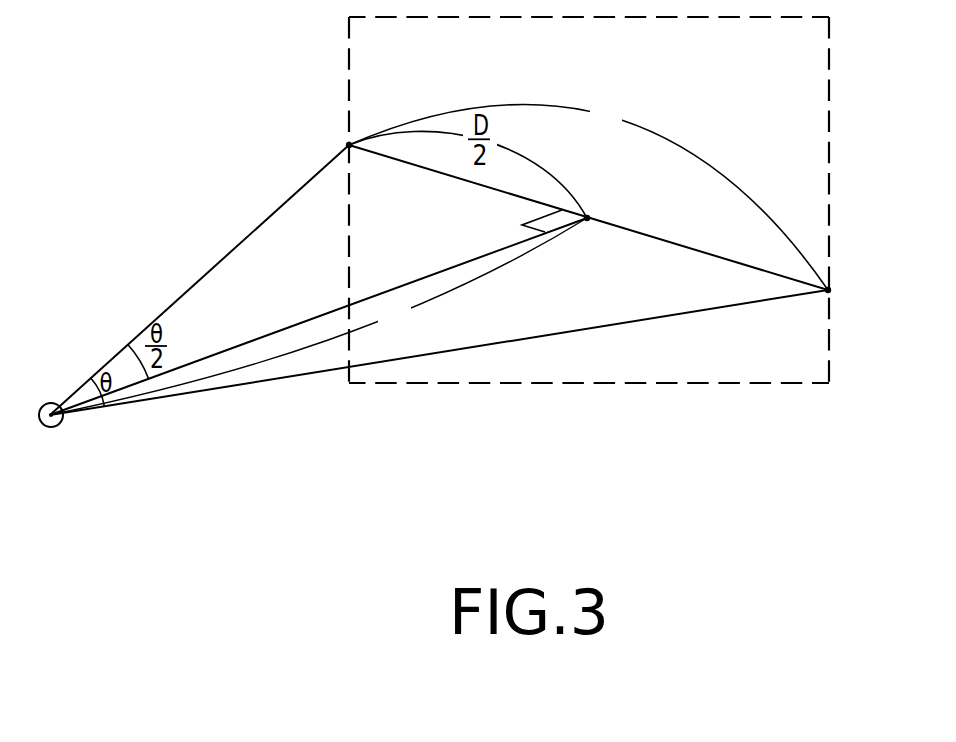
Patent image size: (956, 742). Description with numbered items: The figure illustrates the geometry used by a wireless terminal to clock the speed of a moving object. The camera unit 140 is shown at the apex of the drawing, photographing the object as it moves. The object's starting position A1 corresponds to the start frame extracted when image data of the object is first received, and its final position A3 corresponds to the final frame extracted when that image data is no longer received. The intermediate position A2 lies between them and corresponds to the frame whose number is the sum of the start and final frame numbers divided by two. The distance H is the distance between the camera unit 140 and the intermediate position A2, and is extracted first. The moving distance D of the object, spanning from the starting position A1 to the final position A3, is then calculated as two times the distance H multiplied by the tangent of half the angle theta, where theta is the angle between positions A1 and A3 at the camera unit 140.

The camera unit 140 is at (62, 424).
The starting position of the object A1 is at (331, 131).
The intermediate position of the object A2 is at (606, 204).
The final position of the object A3 is at (848, 282).
The moving distance D is at (588, 195).
The distance H is at (318, 316).